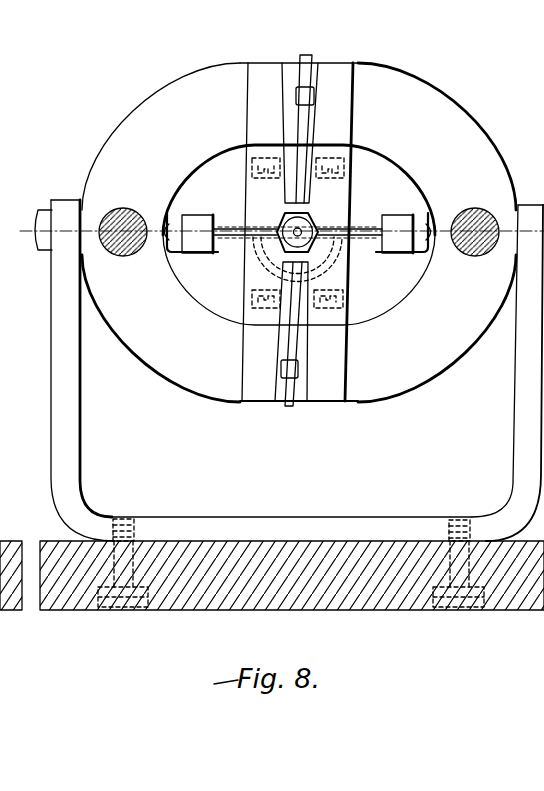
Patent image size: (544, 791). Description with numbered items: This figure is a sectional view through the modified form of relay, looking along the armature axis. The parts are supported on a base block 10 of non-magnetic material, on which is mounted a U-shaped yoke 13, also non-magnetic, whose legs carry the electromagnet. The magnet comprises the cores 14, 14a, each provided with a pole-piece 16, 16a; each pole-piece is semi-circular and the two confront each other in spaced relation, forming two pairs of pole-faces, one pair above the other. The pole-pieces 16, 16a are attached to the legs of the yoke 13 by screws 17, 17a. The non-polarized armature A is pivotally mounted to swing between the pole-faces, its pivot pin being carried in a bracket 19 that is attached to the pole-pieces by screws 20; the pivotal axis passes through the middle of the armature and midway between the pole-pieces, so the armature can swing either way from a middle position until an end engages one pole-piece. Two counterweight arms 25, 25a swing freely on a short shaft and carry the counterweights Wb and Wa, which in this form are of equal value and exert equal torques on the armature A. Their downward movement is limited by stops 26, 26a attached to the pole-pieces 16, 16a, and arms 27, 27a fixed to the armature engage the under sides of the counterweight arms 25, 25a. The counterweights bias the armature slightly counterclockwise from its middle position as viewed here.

The base block 10 is at (509, 612).
The U-shaped yoke 13 is at (297, 403).
The core 14 is at (122, 207).
The core 14a is at (477, 197).
The pole-piece 16 is at (138, 107).
The pole-piece 16a is at (478, 98).
The screw 17 is at (33, 220).
The screw 17a is at (540, 212).
The bracket 19 is at (352, 163).
The screw 20 is at (340, 167).
The counterweight arm 25 is at (233, 236).
The counterweight arm 25a is at (367, 238).
The stop 26 is at (172, 256).
The stop 26a is at (414, 254).
The arm 27 is at (268, 262).
The arm 27a is at (330, 273).
The armature A is at (321, 60).
The counterweight Wa is at (393, 215).
The counterweight Wb is at (200, 215).